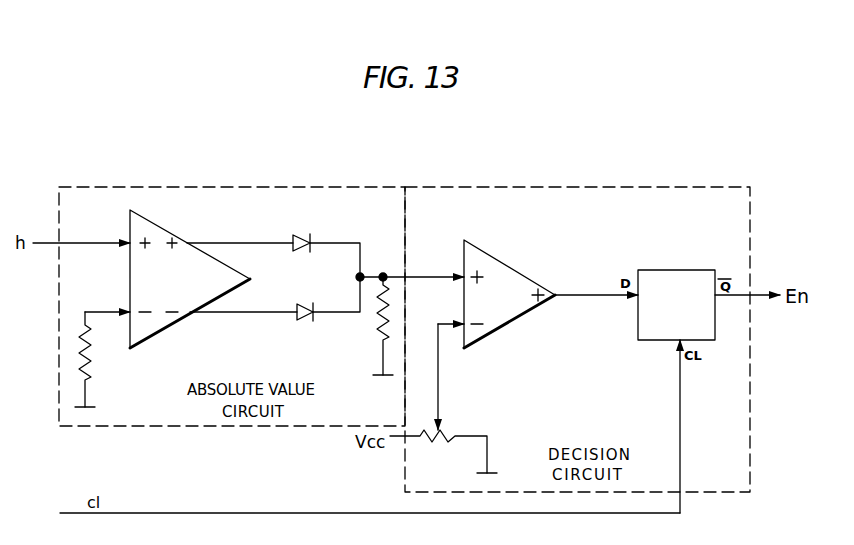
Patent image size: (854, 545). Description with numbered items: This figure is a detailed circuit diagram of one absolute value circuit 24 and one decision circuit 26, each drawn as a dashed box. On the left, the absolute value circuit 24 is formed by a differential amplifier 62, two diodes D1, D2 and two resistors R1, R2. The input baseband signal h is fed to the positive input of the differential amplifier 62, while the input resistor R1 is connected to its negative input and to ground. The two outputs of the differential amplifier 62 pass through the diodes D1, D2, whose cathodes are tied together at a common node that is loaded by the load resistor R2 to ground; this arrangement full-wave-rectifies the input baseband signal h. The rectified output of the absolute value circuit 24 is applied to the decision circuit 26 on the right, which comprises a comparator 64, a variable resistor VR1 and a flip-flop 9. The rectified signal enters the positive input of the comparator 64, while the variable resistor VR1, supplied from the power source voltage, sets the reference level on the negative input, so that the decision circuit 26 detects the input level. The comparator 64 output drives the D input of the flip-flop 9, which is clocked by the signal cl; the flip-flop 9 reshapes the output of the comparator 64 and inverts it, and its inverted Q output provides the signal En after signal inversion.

The absolute value circuit 24 is at (261, 187).
The decision circuit 26 is at (607, 187).
The differential amplifier 62 is at (242, 229).
The comparator 64 is at (499, 264).
The flip-flop 9 is at (676, 305).
The diode D1 is at (310, 230).
The diode D2 is at (303, 300).
The input resistor R1 is at (92, 366).
The load resistor R2 is at (378, 335).
The variable resistor VR1 is at (444, 442).